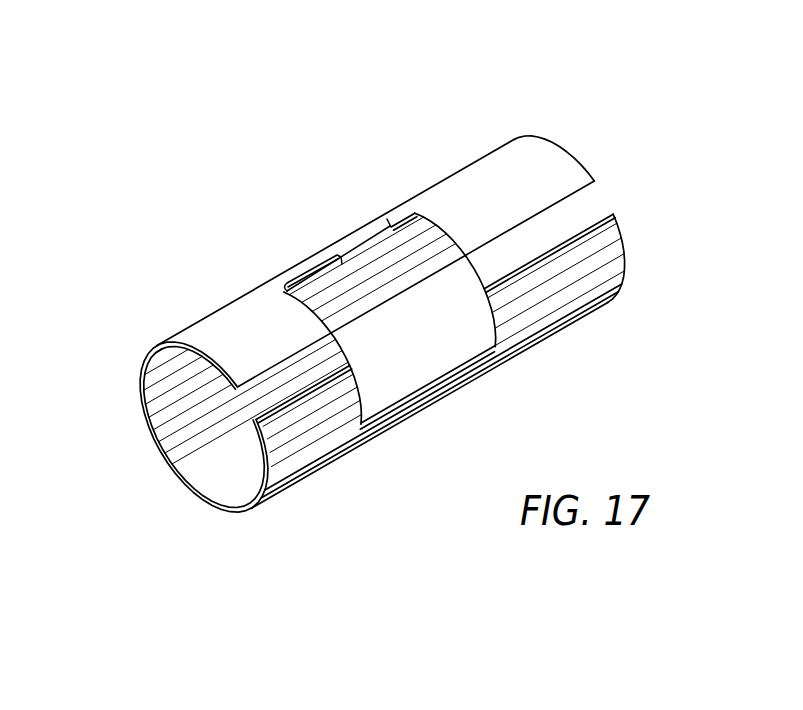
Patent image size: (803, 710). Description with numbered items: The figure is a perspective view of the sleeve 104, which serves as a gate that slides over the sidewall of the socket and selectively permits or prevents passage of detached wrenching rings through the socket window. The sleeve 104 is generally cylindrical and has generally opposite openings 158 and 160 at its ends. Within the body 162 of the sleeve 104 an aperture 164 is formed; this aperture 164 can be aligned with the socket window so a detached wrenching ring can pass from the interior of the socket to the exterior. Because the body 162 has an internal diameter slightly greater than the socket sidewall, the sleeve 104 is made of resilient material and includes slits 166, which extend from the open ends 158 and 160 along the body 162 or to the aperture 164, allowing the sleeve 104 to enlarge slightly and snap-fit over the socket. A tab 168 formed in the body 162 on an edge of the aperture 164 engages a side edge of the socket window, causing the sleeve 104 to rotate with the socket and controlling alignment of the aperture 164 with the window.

The sleeve 104 is at (140, 128).
The opening 158 is at (602, 203).
The opening 160 is at (185, 462).
The body 162 is at (240, 342).
The aperture 164 is at (380, 355).
The slit 166 is at (258, 402).
The tab 168 is at (363, 252).